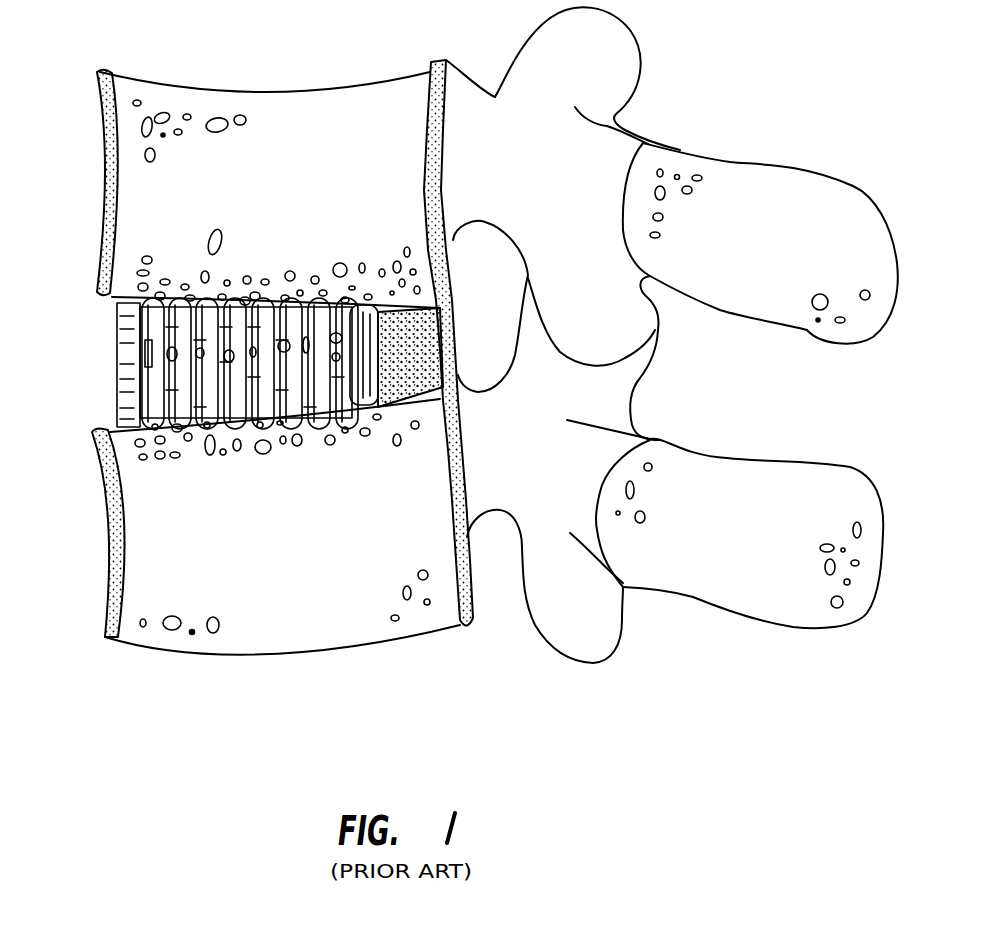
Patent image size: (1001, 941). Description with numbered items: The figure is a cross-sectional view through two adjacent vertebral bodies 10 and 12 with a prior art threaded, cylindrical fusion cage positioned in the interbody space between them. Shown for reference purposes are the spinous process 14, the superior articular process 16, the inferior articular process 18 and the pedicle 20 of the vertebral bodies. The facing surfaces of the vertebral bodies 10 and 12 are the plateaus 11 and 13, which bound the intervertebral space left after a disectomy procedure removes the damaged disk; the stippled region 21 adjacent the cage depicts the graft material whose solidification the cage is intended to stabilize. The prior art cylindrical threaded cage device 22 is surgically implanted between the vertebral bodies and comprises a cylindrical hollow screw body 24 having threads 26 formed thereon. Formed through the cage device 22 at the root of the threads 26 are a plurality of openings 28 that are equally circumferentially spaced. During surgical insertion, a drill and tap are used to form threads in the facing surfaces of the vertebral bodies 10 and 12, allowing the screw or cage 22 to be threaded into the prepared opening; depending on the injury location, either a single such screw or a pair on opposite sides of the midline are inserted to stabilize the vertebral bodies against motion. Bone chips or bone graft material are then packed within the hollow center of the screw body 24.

The vertebral body 10 is at (111, 232).
The plateau 11 is at (397, 294).
The vertebral body 12 is at (110, 533).
The plateau 13 is at (418, 400).
The spinous process 14 is at (800, 260).
The superior articular process 16 is at (586, 69).
The inferior articular process 18 is at (601, 342).
The pedicle 20 is at (503, 153).
The bone graft material 21 is at (428, 340).
The cylindrical threaded cage device 22 is at (197, 315).
The cylindrical hollow screw body 24 is at (148, 380).
The threads 26 is at (154, 332).
The openings 28 is at (245, 294).